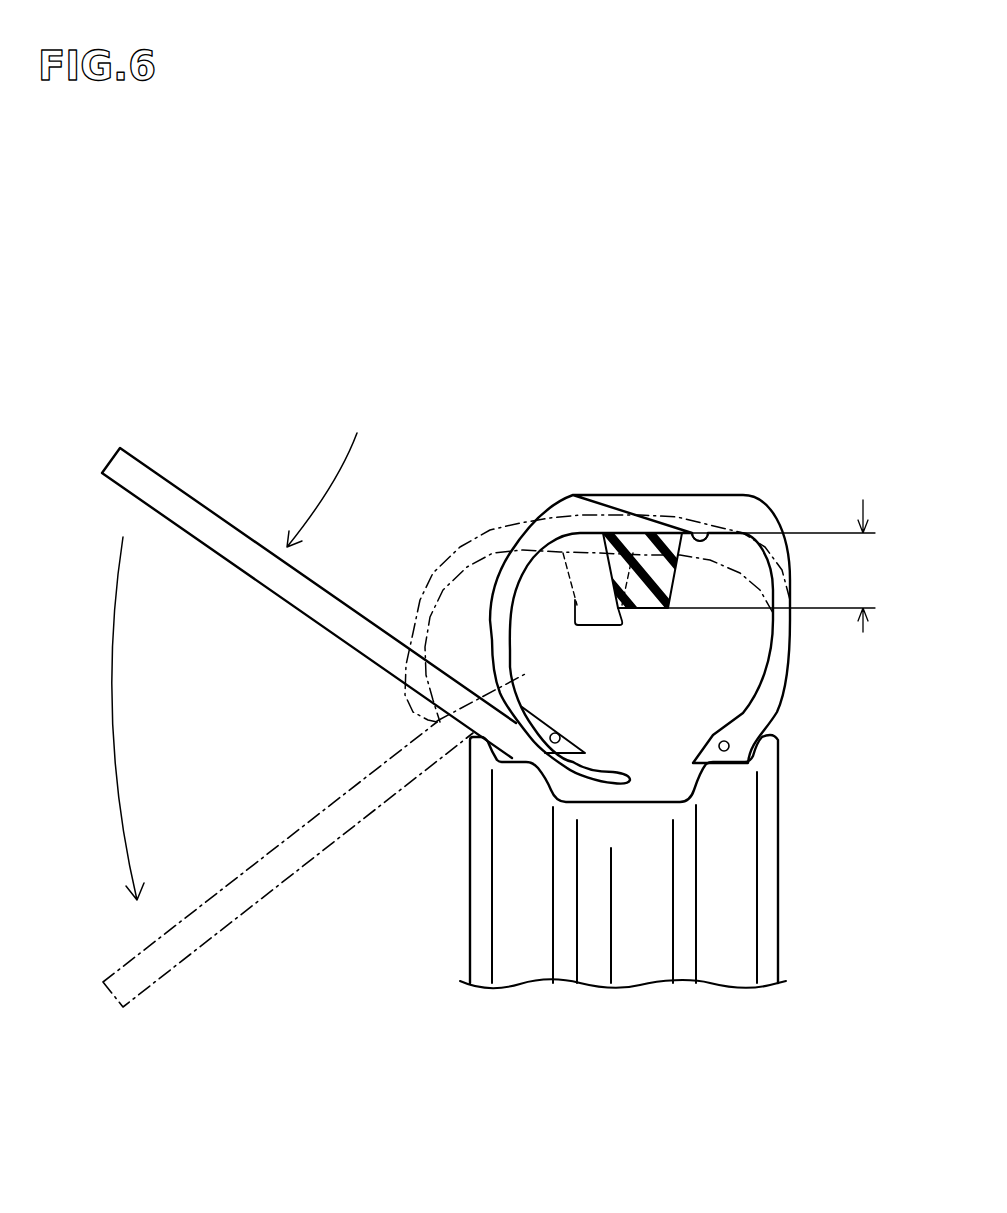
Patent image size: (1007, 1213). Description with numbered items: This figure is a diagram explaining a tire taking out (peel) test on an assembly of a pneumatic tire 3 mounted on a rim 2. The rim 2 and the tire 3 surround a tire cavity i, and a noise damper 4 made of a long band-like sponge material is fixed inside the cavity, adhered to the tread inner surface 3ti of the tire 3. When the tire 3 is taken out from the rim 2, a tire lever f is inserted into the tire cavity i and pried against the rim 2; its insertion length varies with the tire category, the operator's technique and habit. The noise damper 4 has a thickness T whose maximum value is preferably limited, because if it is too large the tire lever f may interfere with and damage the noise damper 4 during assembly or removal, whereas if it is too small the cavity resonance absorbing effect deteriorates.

The rim 2 is at (773, 737).
The pneumatic tire 3 is at (642, 495).
The tread inner surface 3ti is at (700, 533).
The noise damper 4 is at (488, 568).
The tire lever f is at (325, 474).
The tire cavity i is at (655, 689).
The thickness T is at (784, 566).